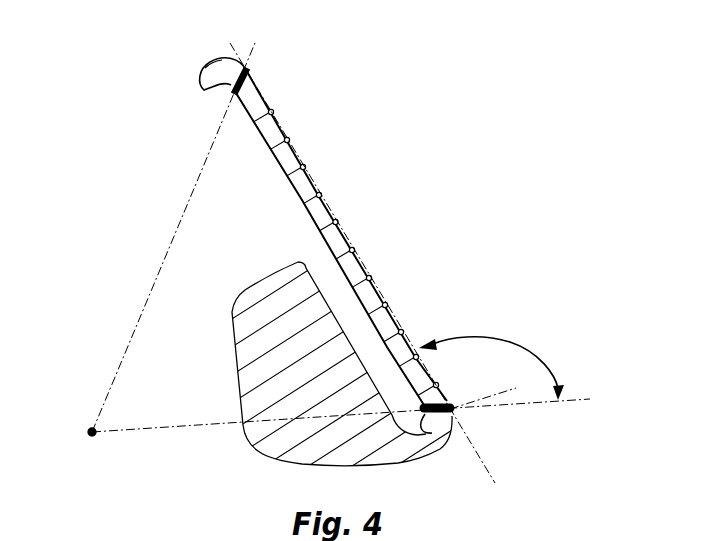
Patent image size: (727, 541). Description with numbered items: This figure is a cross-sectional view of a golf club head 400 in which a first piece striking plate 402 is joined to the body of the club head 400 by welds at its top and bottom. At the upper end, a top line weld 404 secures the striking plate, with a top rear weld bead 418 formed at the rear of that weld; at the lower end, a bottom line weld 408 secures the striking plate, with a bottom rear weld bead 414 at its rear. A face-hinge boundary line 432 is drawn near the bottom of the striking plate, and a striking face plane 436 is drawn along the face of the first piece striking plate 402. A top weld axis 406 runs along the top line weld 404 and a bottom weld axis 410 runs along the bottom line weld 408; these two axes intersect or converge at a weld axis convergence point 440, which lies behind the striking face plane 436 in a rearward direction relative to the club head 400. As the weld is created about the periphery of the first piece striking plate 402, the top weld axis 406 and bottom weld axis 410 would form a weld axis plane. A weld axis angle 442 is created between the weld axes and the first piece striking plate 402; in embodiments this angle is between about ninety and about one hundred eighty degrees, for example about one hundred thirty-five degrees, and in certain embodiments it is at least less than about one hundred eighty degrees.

The club head 400 is at (132, 91).
The first piece striking plate 402 is at (310, 210).
The top line weld 404 is at (264, 72).
The top weld axis 406 is at (203, 168).
The bottom line weld 408 is at (471, 417).
The bottom weld axis 410 is at (137, 430).
The bottom rear weld bead 414 is at (423, 430).
The top rear weld bead 418 is at (236, 96).
The face-hinge boundary line 432 is at (501, 389).
The striking face plane 436 is at (493, 472).
The weld axis convergence point 440 is at (94, 434).
The weld axis angle 442 is at (527, 342).